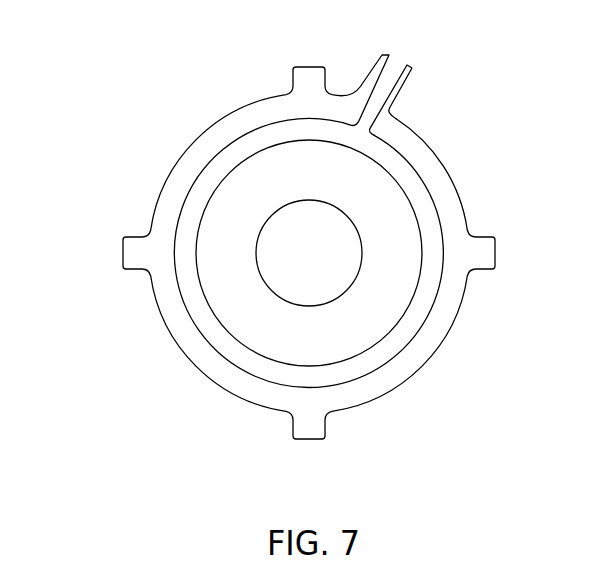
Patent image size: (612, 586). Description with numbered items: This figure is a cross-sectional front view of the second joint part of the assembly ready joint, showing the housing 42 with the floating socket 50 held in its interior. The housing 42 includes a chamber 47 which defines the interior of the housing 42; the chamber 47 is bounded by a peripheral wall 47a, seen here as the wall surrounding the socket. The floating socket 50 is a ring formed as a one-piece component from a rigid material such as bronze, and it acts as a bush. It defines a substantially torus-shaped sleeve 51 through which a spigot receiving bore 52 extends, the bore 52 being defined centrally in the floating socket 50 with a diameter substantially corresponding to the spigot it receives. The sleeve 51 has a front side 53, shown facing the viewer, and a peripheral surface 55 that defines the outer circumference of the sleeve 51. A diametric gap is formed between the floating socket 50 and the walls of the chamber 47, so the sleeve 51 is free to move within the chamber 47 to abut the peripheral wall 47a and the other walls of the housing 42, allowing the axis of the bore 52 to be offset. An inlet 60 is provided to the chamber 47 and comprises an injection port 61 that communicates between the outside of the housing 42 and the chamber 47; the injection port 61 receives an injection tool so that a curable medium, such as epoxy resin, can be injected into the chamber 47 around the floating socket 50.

The housing 42 is at (443, 197).
The chamber 47 is at (380, 352).
The peripheral wall 47a is at (190, 300).
The floating socket 50 is at (299, 351).
The sleeve 51 is at (230, 198).
The spigot receiving bore 52 is at (283, 287).
The front side 53 is at (392, 290).
The peripheral surface 55 is at (213, 318).
The inlet 60 is at (368, 123).
The injection port 61 is at (412, 73).